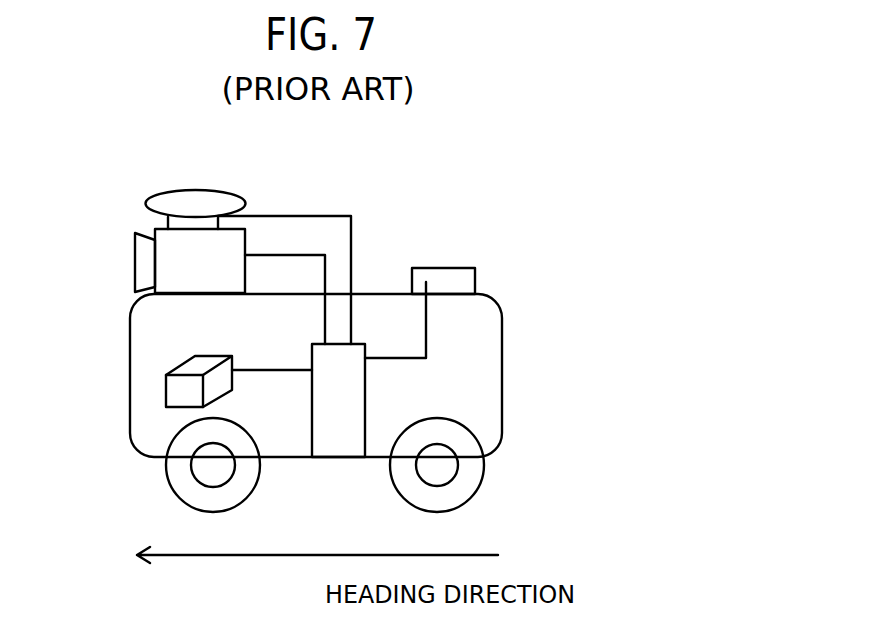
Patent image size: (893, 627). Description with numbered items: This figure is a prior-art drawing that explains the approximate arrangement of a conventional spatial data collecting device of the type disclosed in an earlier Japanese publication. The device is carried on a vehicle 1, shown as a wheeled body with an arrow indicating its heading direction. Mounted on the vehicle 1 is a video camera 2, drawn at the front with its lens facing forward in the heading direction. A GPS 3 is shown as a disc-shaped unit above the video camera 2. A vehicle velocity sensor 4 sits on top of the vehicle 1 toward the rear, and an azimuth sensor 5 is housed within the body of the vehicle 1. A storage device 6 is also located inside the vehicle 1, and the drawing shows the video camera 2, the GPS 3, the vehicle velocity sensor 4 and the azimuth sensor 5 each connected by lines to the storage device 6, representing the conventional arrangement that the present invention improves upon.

The vehicle 1 is at (502, 333).
The video camera 2 is at (135, 257).
The GPS 3 is at (195, 189).
The vehicle velocity sensor 4 is at (447, 267).
The azimuth sensor 5 is at (173, 388).
The storage device 6 is at (352, 387).